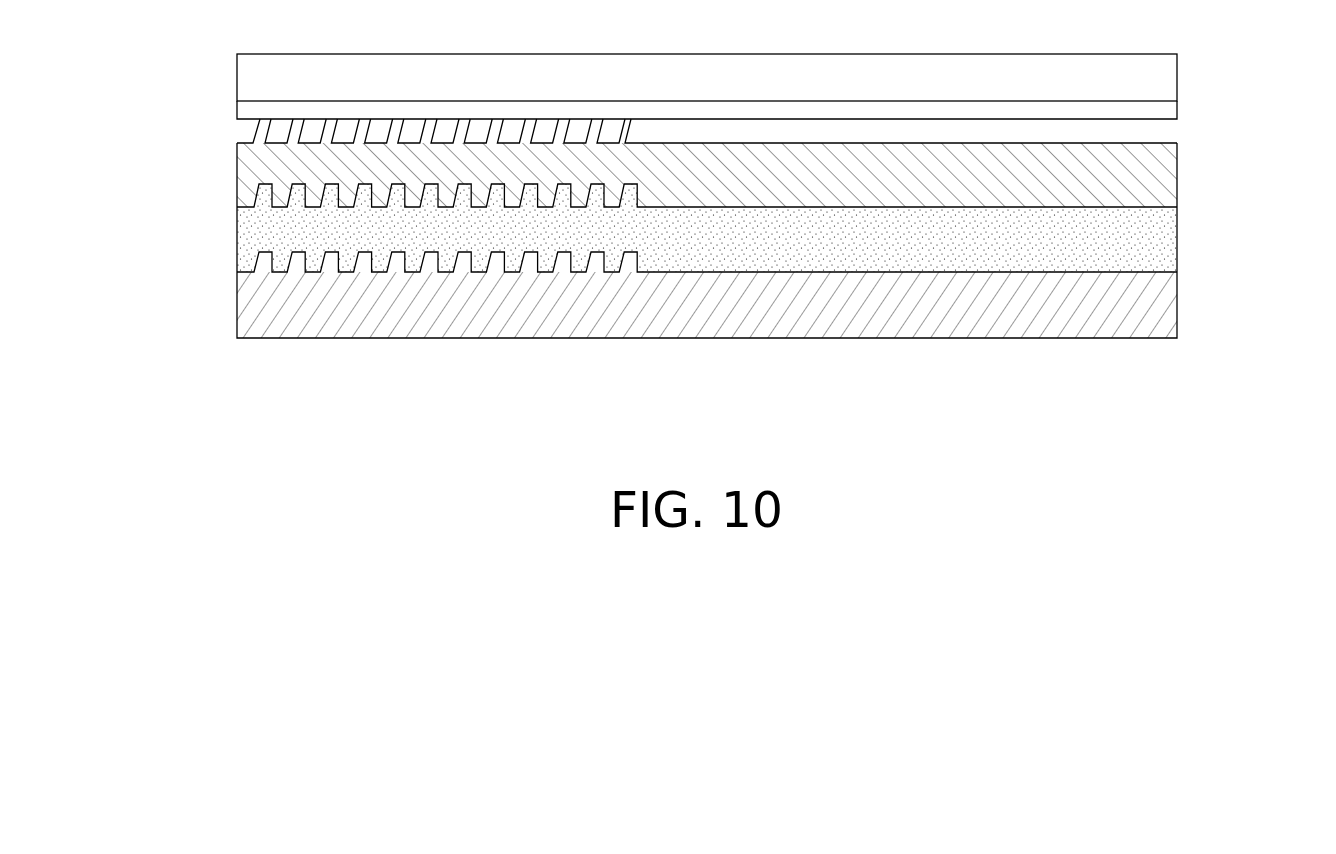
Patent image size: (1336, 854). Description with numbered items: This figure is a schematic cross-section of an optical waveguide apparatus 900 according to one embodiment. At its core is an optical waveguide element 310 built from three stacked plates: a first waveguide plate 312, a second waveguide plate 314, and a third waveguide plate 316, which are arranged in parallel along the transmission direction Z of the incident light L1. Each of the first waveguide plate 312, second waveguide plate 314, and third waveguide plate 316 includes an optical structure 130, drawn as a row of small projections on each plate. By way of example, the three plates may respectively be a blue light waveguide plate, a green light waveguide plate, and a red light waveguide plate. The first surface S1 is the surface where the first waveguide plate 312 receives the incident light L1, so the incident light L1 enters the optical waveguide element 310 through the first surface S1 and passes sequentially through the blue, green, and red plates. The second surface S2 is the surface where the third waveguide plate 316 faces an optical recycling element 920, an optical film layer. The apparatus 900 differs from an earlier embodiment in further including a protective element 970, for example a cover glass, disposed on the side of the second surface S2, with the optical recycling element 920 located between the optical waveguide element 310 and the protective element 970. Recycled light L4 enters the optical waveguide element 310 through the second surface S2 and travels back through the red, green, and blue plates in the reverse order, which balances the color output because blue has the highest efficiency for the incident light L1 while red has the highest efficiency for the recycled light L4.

The optical waveguide apparatus 900 is at (1318, 454).
The protective element 970 is at (1160, 73).
The optical recycling element 920 is at (1160, 112).
The optical waveguide element 310 is at (776, 240).
The third waveguide plate 316 is at (1160, 178).
The second waveguide plate 314 is at (1160, 243).
The first waveguide plate 312 is at (743, 305).
The optical structure 130 is at (226, 114).
The recycled light L4 is at (543, 204).
The incident light L1 is at (443, 254).
The second surface S2 is at (935, 141).
The first surface S1 is at (935, 340).
The transmission direction Z is at (92, 172).